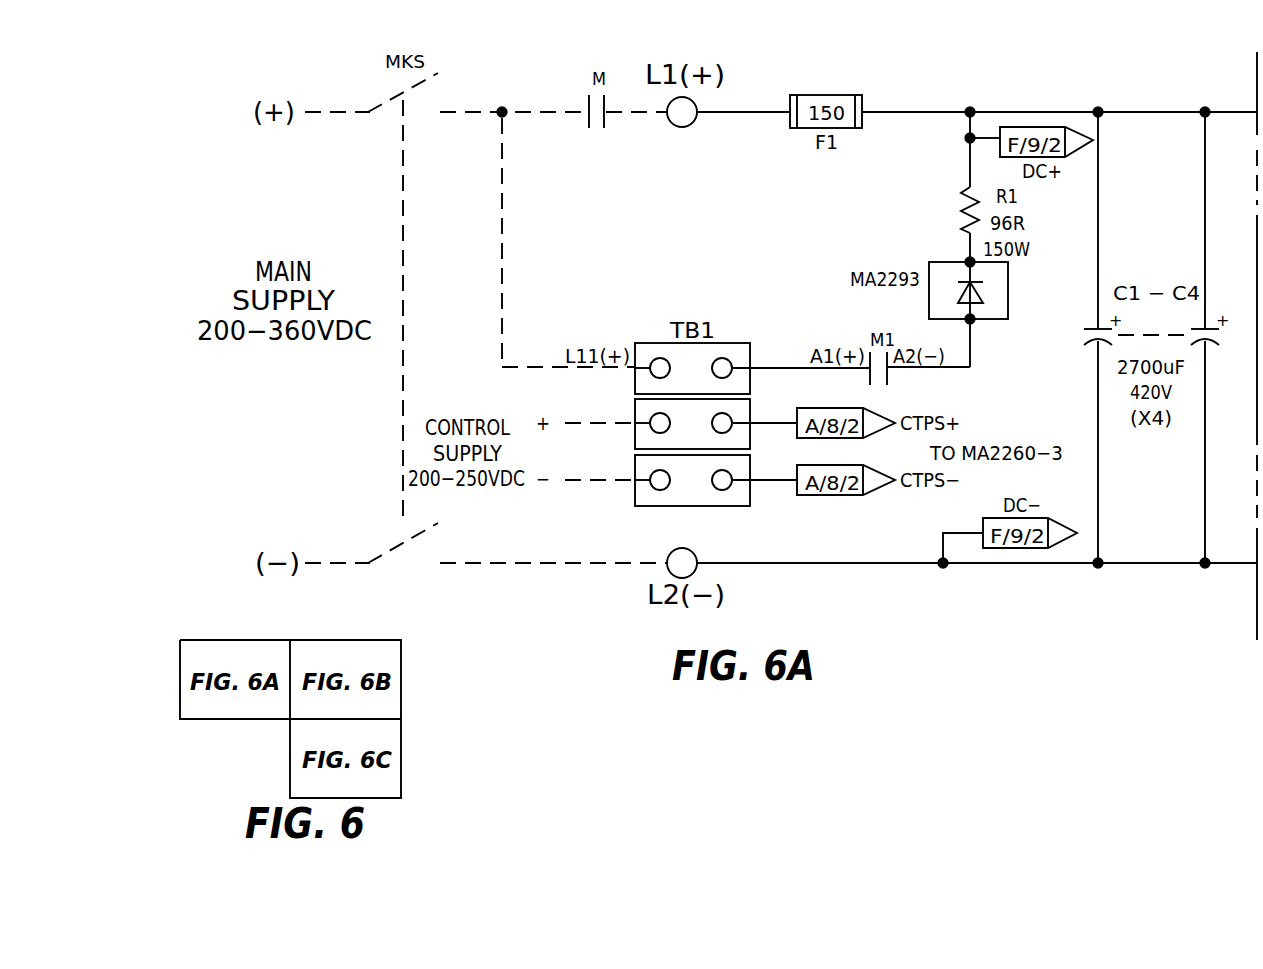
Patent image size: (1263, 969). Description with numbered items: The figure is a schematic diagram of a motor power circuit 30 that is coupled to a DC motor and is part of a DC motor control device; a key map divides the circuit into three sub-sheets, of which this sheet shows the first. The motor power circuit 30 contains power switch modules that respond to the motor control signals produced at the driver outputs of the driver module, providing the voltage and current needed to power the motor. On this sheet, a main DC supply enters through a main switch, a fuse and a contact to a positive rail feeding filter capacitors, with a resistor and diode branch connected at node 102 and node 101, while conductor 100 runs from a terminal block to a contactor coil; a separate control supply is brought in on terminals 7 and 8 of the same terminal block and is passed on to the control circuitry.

In FIG. 6A, the motor power circuit 30 is at (536, 640).
In FIG. 6, the motor power circuit 30 is at (243, 740).
In FIG. 6A, the conductor from terminal block TB1 to capacitor M1 100 is at (752, 368).
In FIG. 6A, the node between resistor R1 and diode MA2293 101 is at (955, 250).
In FIG. 6A, the node on DC+ rail feeding resistor R1 102 is at (967, 149).
In FIG. 6A, the control supply terminal 7 is at (681, 424).
In FIG. 6A, the control supply terminal 8 is at (681, 480).